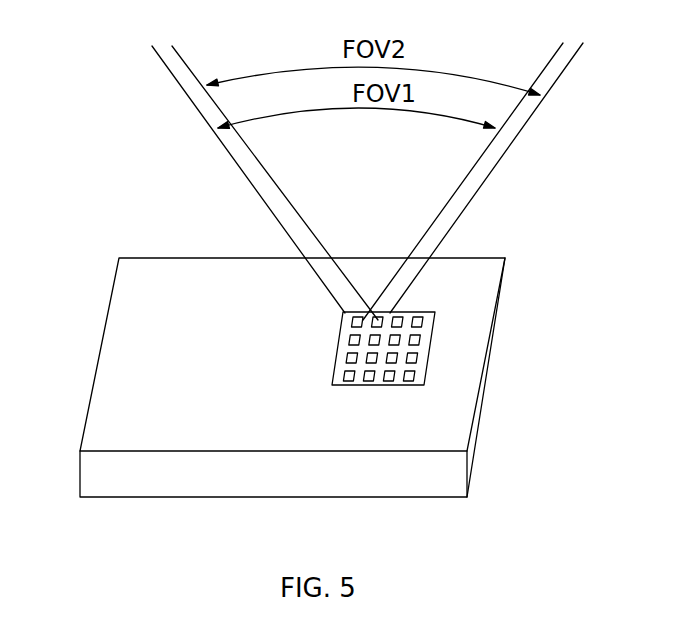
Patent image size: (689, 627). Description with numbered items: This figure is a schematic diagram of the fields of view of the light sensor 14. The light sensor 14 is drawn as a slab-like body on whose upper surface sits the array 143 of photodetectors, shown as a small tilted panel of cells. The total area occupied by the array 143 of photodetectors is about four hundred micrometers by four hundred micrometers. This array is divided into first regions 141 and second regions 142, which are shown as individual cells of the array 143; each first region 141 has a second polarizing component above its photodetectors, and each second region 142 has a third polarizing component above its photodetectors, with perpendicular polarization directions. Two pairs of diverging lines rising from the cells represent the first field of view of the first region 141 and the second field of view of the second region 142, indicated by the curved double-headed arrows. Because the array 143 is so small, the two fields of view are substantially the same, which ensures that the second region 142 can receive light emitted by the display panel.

The light sensor 14 is at (455, 440).
The first region 141 is at (353, 324).
The second region 142 is at (382, 320).
The array of photodetectors 143 is at (425, 372).